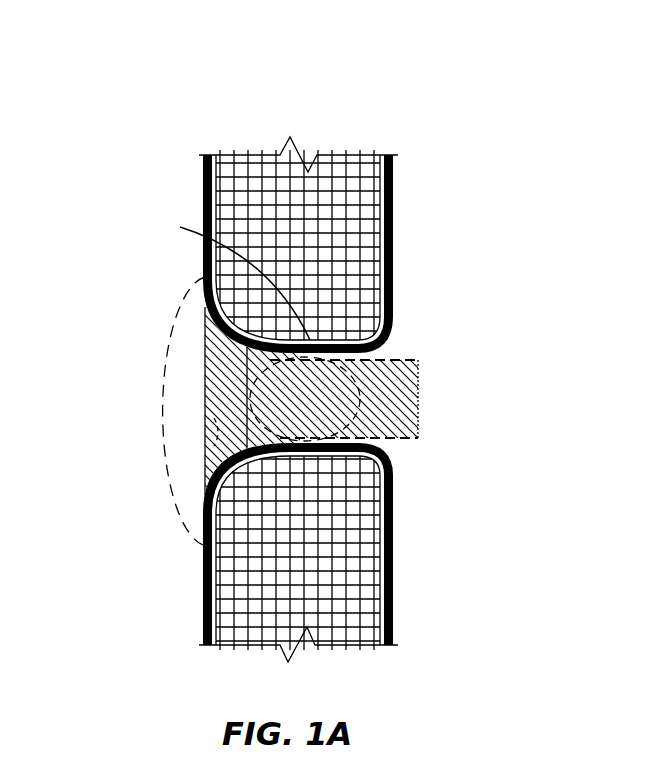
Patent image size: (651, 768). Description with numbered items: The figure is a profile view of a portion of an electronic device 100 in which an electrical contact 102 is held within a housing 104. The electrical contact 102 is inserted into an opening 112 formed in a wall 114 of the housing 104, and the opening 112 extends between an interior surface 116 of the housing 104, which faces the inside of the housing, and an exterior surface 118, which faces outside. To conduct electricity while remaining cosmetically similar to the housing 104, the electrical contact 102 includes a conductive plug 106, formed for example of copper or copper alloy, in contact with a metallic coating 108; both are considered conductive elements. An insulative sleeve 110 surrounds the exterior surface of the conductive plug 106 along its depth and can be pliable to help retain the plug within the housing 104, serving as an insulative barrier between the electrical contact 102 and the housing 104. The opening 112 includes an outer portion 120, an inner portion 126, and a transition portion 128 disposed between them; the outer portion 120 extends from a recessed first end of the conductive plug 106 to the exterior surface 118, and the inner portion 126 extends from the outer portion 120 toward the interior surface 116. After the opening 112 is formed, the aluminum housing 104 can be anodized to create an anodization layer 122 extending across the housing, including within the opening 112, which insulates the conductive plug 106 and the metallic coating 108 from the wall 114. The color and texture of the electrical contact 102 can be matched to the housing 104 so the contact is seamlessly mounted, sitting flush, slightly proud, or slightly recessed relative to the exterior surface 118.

The electronic device 100 is at (280, 355).
The electrical contact 102 is at (298, 391).
The housing 104 is at (302, 402).
The conductive plug 106 is at (407, 408).
The metallic coating 108 is at (218, 407).
The insulative sleeve 110 is at (404, 360).
The opening 112 is at (397, 450).
The wall 114 is at (297, 400).
The interior surface 116 is at (394, 597).
The exterior surface 118 is at (207, 561).
The outer portion 120 is at (168, 327).
The anodization layer 122 is at (394, 252).
The inner portion 126 is at (217, 276).
The transition portion 128 is at (222, 434).